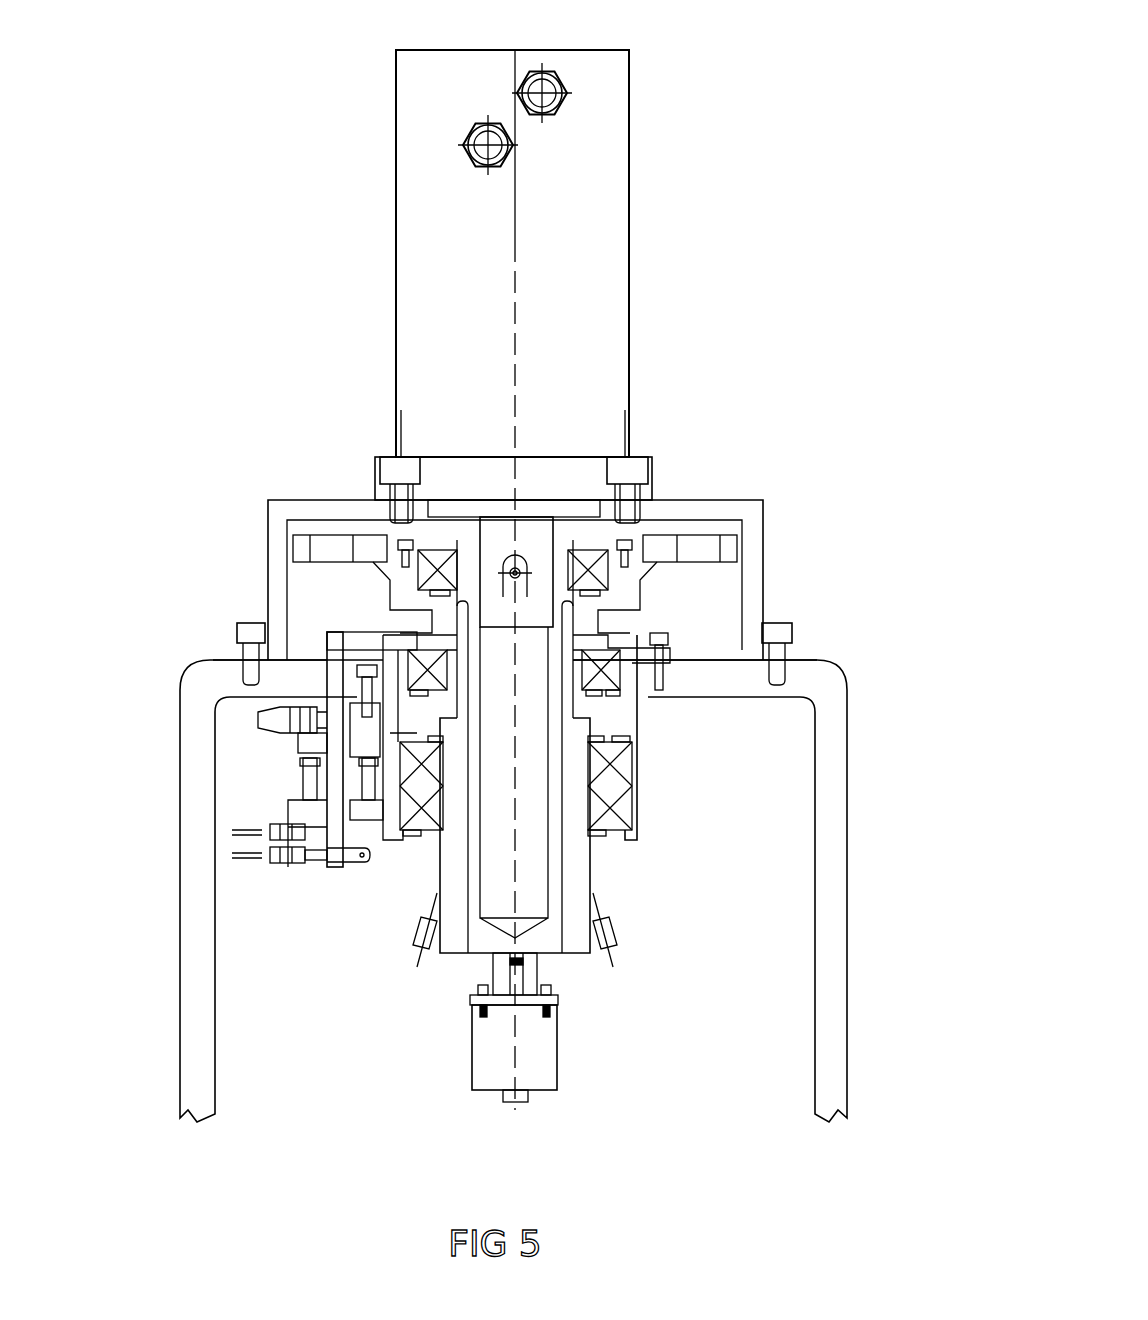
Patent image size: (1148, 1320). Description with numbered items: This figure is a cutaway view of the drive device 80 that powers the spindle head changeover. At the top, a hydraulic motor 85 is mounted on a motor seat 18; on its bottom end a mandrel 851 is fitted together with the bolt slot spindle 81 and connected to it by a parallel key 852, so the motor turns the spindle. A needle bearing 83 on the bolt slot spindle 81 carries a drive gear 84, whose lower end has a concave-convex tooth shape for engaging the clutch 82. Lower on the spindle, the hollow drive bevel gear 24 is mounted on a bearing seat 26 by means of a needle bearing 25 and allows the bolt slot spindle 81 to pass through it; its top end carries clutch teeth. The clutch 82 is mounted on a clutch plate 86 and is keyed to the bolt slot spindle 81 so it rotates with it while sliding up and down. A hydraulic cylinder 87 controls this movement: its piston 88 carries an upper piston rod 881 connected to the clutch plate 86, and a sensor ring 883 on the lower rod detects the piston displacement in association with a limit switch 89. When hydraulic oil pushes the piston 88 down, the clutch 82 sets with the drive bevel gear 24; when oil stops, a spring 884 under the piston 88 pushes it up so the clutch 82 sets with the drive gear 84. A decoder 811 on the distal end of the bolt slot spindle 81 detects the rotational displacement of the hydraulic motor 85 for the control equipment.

The drive device 80 is at (365, 245).
The hydraulic motor 85 is at (465, 428).
The mandrel 851 is at (535, 548).
The parallel key 852 is at (520, 595).
The drive gear 84 is at (690, 540).
The motor seat 18 is at (278, 512).
The clutch plate 86 is at (375, 642).
The clutch 82 is at (583, 643).
The upper piston rod 881 is at (337, 682).
The needle bearing 83 is at (615, 673).
The hydraulic cylinder 87 is at (308, 747).
The piston 88 is at (327, 757).
The spring 884 is at (297, 773).
The needle bearing 25 is at (615, 778).
The bearing seat 26 is at (638, 810).
The limit switch 89 is at (267, 837).
The drive bevel gear 24 is at (582, 887).
The sensor ring 883 is at (353, 863).
The bolt slot spindle 81 is at (487, 943).
The decoder 811 is at (500, 1070).